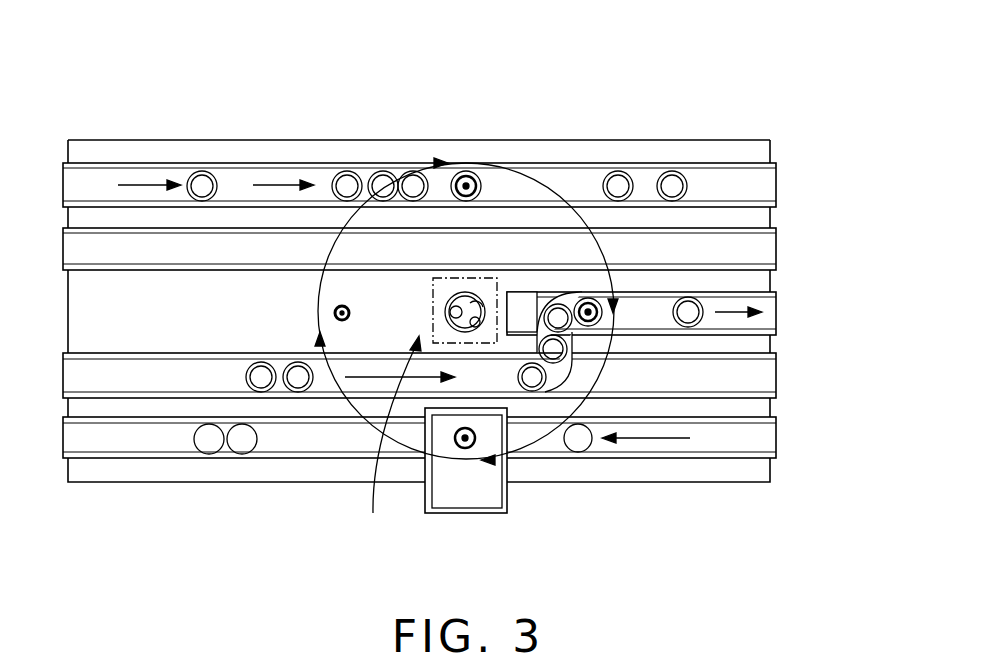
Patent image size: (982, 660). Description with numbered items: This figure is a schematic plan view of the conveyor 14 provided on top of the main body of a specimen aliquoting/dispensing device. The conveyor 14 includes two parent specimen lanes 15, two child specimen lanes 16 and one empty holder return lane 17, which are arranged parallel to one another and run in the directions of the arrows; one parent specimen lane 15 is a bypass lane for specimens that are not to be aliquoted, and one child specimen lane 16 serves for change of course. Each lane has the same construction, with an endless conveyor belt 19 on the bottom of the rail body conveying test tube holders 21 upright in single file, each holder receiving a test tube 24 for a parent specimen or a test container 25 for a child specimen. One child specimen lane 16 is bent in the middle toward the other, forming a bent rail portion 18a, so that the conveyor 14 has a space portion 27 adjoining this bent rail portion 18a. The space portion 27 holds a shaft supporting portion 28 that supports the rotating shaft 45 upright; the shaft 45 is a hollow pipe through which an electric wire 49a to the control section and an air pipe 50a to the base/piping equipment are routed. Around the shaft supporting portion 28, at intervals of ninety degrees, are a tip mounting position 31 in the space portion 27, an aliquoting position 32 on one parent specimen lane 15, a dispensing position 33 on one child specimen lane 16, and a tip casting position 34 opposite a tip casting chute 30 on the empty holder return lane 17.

The conveyor 14 is at (660, 126).
The parent specimen lanes 15 is at (757, 246).
The child specimen lanes 16 is at (757, 375).
The empty holder return lane 17 is at (757, 435).
The bent rail portion 18a is at (607, 292).
The conveyor belt 19 is at (108, 180).
The test tube holders 21 is at (416, 173).
The test tube 24 is at (337, 185).
The test container 25 is at (545, 387).
The space portion 27 is at (387, 441).
The shaft supporting portion 28 is at (487, 305).
The tip casting chute 30 is at (458, 478).
The tip mounting position 31 is at (333, 313).
The aliquoting position 32 is at (472, 171).
The dispensing position 33 is at (601, 324).
The tip casting position 34 is at (472, 446).
The rotating shaft 45 is at (440, 307).
The electric wire 49a is at (540, 307).
The air pipe 50a is at (459, 296).